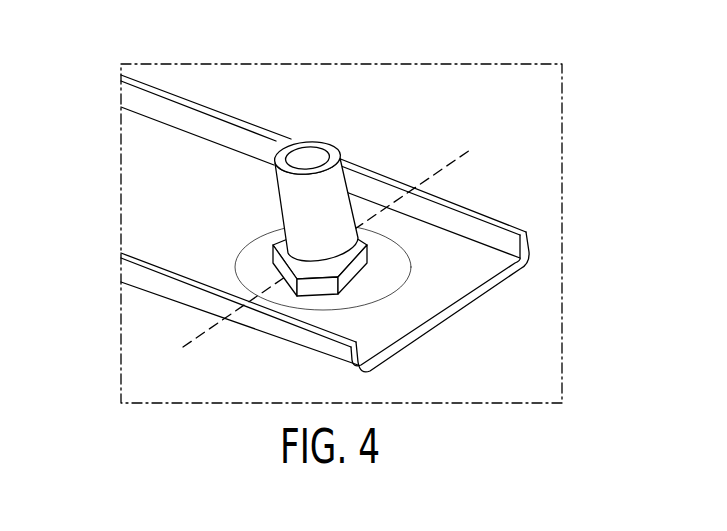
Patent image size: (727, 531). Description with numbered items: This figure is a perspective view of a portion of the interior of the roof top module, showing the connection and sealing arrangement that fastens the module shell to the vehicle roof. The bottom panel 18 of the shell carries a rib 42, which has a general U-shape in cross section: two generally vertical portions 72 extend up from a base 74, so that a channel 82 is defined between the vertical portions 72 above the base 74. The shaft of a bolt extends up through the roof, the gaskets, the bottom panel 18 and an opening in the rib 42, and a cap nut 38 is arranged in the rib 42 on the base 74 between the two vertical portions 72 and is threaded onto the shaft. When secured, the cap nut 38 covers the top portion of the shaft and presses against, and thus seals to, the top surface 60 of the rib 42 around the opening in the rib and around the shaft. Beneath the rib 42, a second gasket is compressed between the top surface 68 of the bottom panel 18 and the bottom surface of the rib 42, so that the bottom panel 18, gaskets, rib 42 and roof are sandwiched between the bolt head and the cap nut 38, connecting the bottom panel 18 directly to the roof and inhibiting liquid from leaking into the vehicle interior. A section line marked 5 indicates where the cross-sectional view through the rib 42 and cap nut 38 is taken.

The section line 5- 5 is at (470, 150).
The bottom panel 18 is at (338, 193).
The cap nut 38 is at (333, 182).
The rib 42 is at (297, 239).
The top surface of the rib 60 is at (155, 217).
The top surface of the bottom panel 68 is at (338, 208).
The vertical portions 72 is at (295, 189).
The base 74 is at (142, 167).
The channel 82 is at (180, 147).